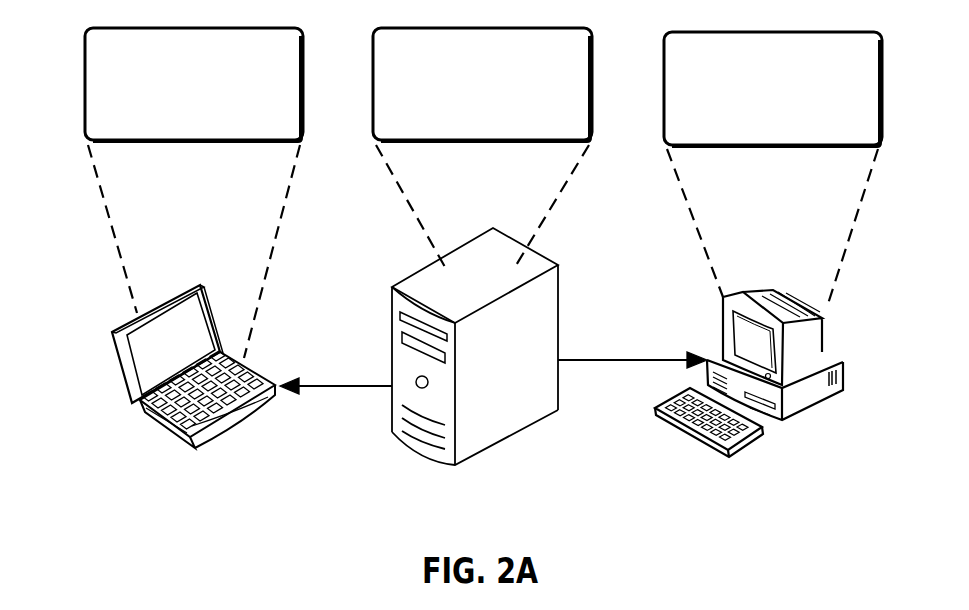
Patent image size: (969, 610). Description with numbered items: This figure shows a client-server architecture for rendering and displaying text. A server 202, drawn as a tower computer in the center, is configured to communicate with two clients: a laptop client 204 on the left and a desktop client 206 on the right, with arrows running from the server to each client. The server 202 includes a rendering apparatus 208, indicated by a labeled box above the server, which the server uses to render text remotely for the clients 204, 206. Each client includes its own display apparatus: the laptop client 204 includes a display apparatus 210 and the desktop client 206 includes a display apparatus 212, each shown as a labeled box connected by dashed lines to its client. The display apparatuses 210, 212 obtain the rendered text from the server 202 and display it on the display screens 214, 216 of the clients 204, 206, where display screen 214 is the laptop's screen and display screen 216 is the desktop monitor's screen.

The server 202 is at (493, 378).
The client 204 is at (152, 396).
The client 206 is at (788, 401).
The rendering apparatus 208 is at (482, 147).
The display apparatus 210 is at (194, 193).
The display apparatus 212 is at (773, 169).
The display screen 214 is at (157, 337).
The display screen 216 is at (763, 350).